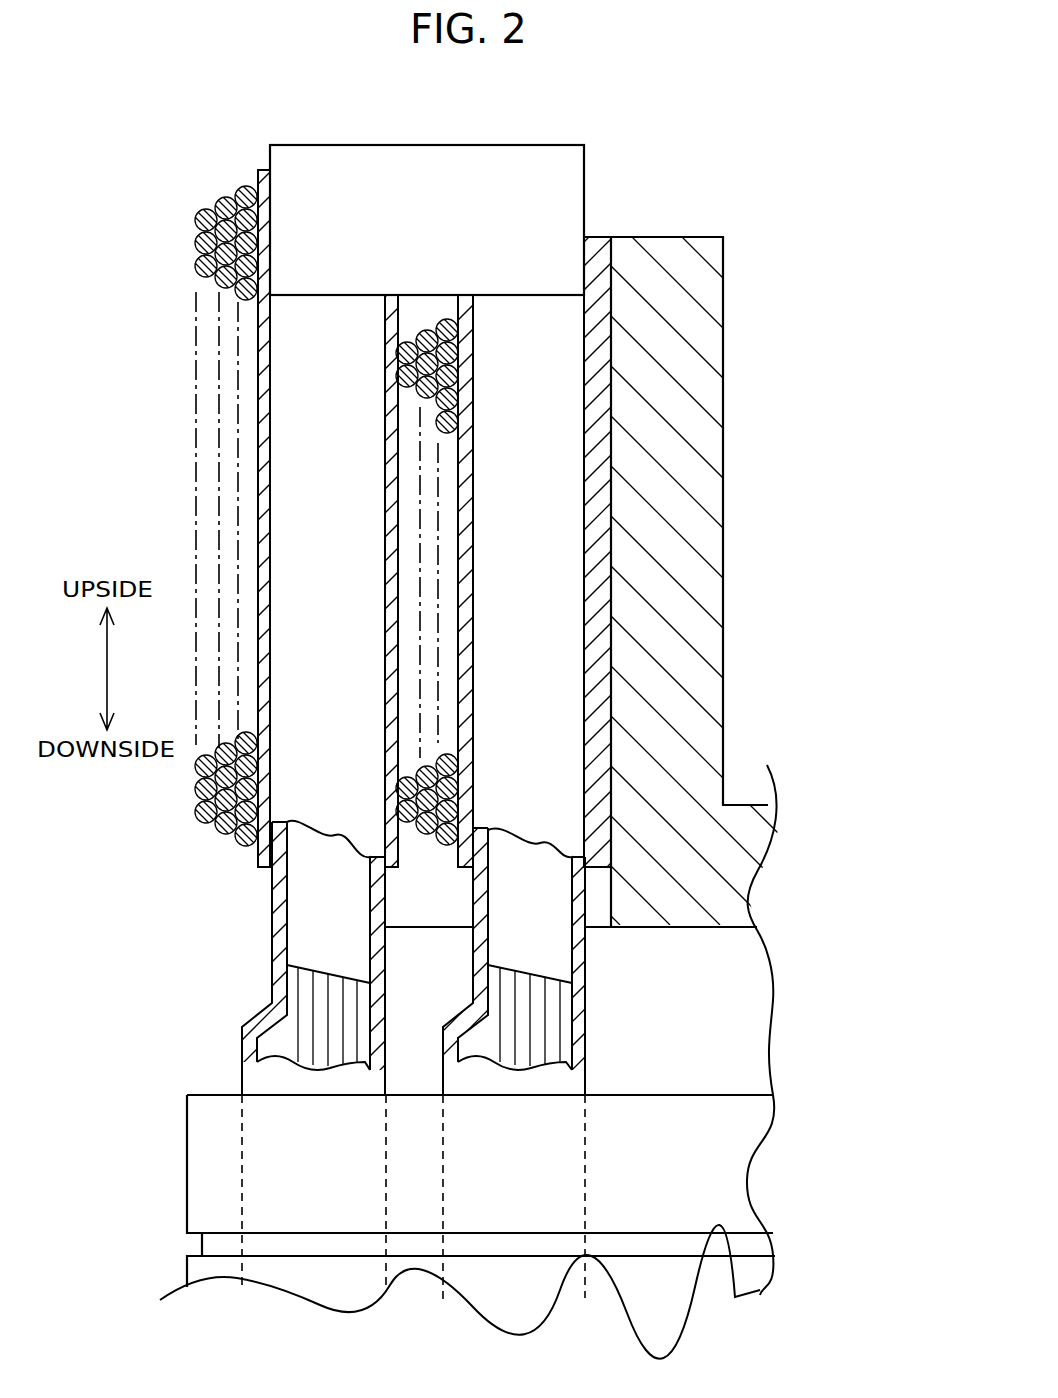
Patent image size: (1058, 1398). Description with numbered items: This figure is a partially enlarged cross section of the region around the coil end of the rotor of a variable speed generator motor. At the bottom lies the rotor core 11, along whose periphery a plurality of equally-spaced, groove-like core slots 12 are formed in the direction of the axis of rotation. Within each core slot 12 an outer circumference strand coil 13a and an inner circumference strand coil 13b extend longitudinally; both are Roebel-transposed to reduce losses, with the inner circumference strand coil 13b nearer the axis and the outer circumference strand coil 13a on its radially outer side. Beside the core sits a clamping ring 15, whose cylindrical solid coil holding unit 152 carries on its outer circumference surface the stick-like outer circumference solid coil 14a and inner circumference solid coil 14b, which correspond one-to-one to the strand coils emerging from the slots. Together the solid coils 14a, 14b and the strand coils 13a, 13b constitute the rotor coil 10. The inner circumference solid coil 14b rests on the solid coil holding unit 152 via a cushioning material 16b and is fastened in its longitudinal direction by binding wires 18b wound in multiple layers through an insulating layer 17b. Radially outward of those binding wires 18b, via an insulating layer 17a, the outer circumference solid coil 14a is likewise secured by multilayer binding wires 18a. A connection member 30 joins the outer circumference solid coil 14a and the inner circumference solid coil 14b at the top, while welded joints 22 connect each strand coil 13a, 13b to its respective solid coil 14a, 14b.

The connection member 30 is at (420, 157).
The binding wires 18a is at (222, 204).
The binding wires 18b is at (449, 420).
The cushioning material 16b is at (598, 262).
The solid coil holding unit 152 is at (663, 256).
The clamping ring 15 is at (529, 746).
The insulating layer 17a is at (391, 528).
The insulating layer 17b is at (466, 528).
The outer circumference solid coil 14a is at (352, 882).
The inner circumference solid coil 14b is at (552, 882).
The welded joint 22 is at (342, 983).
The outer circumference strand coil 13a is at (300, 993).
The inner circumference strand coil 13b is at (556, 1005).
The core slot 12 is at (195, 1090).
The rotor core 11 is at (710, 1137).
The rotor coil 10 is at (529, 620).